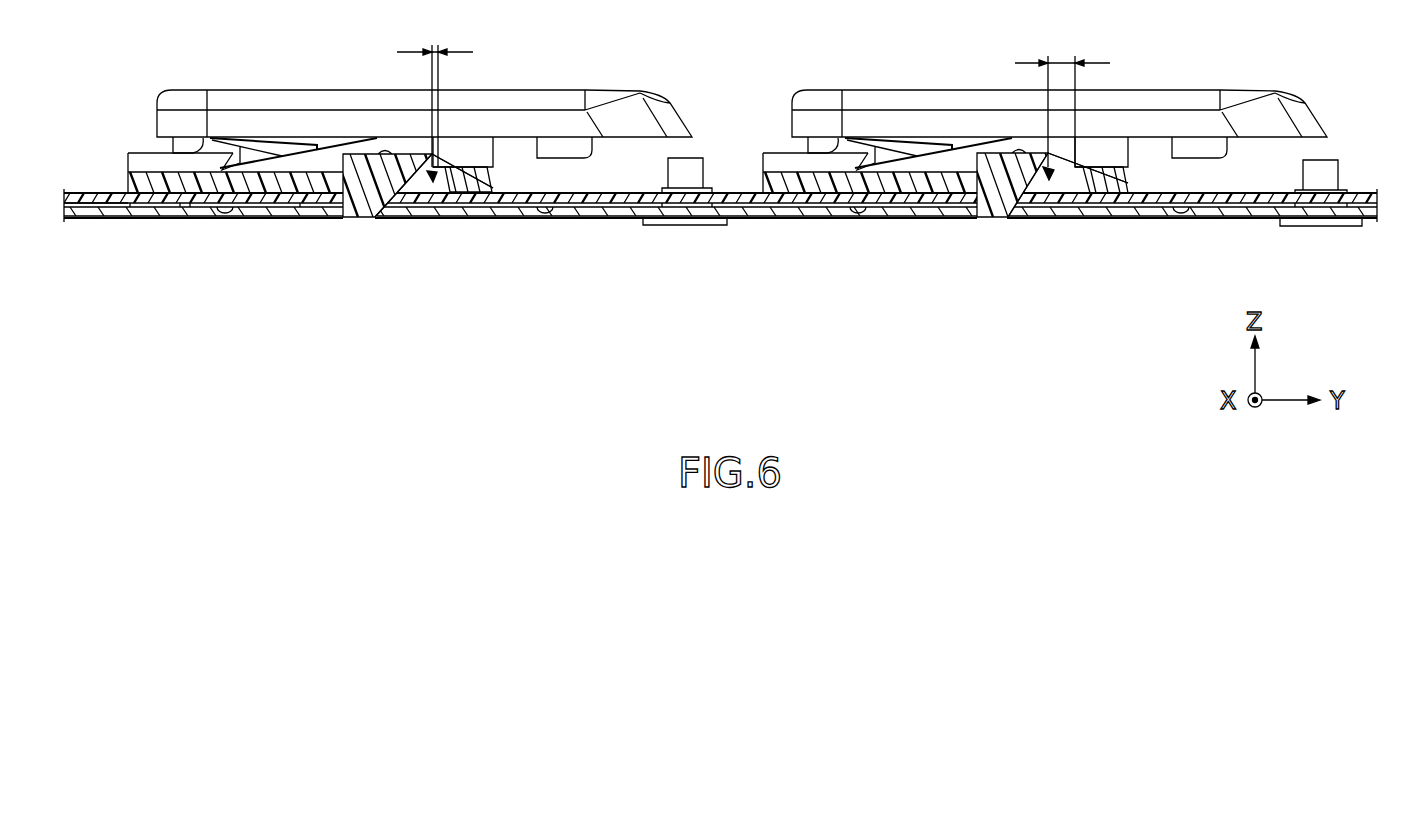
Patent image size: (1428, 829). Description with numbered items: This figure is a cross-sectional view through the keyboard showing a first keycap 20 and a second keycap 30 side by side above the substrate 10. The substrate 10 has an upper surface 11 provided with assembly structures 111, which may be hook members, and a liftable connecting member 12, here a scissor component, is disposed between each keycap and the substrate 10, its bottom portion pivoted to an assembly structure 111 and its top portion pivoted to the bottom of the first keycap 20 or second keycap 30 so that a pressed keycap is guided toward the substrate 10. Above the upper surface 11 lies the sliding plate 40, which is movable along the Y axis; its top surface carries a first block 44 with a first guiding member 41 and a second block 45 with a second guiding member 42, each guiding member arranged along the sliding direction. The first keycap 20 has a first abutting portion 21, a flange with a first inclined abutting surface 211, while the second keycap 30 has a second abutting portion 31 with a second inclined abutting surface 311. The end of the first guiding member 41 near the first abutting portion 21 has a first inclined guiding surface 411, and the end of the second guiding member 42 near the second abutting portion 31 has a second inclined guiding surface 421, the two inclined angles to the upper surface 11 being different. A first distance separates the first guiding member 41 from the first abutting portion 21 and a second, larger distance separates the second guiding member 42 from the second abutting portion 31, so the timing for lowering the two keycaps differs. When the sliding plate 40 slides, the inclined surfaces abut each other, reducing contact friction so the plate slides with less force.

The substrate 10 is at (923, 215).
The upper surface 11 is at (740, 195).
The assembly structure 111 is at (530, 208).
The liftable connecting member 12 is at (255, 144).
The first keycap 20 is at (278, 90).
The first abutting portion 21 is at (487, 165).
The first inclined abutting surface 211 is at (443, 167).
The second keycap 30 is at (893, 90).
The second abutting portion 31 is at (1130, 187).
The second inclined abutting surface 311 is at (1078, 160).
The sliding plate 40 is at (100, 190).
The first guiding member 41 is at (364, 163).
The first inclined guiding surface 411 is at (400, 195).
The second guiding member 42 is at (990, 160).
The second inclined guiding surface 421 is at (1033, 190).
The first block 44 is at (232, 205).
The second block 45 is at (812, 205).